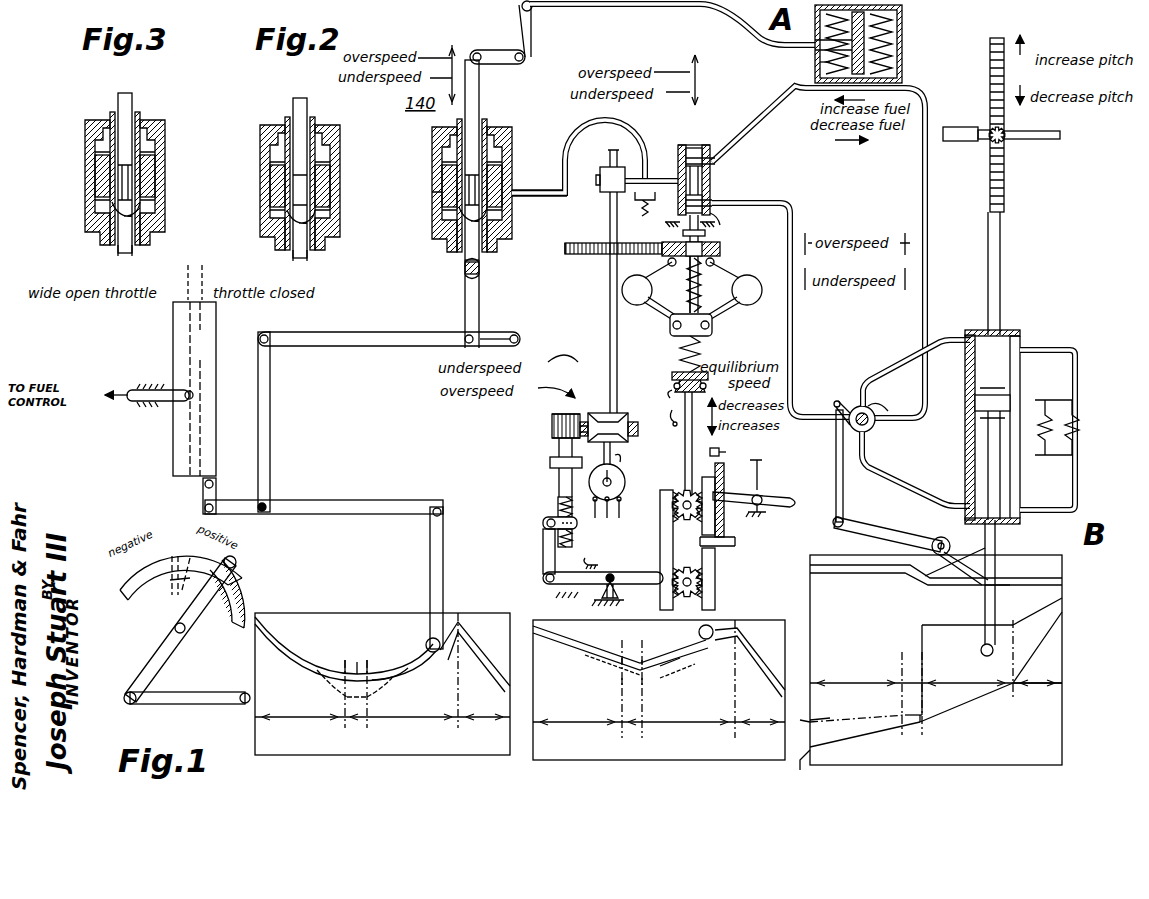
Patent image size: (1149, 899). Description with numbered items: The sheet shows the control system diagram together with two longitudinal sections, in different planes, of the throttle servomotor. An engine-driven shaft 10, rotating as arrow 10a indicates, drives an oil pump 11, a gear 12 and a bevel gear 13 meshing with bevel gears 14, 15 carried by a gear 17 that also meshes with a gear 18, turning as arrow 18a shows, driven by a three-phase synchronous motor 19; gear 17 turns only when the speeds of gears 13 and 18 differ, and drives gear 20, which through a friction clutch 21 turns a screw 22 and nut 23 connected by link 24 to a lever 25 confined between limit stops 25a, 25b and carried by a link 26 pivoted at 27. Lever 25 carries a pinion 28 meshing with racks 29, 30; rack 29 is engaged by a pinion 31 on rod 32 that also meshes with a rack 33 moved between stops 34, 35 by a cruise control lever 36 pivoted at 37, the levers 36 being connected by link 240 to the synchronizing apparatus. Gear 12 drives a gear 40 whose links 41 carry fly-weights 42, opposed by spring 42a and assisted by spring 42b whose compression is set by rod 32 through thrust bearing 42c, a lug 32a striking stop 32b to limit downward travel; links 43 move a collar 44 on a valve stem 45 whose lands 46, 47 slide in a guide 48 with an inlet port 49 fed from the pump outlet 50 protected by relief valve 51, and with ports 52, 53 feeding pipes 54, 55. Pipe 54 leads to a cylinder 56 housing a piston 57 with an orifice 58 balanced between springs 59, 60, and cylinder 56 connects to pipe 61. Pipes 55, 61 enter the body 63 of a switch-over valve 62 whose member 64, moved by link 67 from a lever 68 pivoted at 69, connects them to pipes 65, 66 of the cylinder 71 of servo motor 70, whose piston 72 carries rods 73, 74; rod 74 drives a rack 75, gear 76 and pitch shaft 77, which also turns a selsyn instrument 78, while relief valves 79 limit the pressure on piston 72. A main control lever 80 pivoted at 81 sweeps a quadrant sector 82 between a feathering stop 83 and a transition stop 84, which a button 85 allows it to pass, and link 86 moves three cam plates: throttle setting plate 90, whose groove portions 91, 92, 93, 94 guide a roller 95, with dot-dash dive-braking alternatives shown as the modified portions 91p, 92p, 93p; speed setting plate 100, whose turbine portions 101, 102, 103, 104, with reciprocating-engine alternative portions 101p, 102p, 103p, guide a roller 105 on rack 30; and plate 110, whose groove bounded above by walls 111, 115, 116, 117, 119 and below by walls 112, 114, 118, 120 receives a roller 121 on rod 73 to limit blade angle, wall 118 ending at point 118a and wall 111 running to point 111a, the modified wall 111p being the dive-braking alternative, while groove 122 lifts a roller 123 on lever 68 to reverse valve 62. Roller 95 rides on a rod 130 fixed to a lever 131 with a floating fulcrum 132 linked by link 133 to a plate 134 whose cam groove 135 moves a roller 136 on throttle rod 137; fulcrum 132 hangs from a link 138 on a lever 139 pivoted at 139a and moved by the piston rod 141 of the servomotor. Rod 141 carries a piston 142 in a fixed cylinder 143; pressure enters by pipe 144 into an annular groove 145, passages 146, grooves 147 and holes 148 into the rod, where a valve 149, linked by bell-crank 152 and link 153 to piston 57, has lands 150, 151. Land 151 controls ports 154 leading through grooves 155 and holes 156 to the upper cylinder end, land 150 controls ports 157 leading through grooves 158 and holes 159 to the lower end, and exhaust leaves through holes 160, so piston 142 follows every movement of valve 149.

In FIG. 1, the shaft 10 is at (612, 152).
In FIG. 1, the arrow 10a is at (612, 308).
In FIG. 1, the oil pump 11 is at (604, 167).
In FIG. 1, the gear 12 is at (570, 250).
In FIG. 1, the bevel gear 13 is at (590, 414).
In FIG. 1, the bevel gear 14 is at (580, 424).
In FIG. 1, the bevel gear 15 is at (618, 412).
In FIG. 1, the gear 17 is at (559, 447).
In FIG. 1, the gear 18 is at (612, 448).
In FIG. 1, the arrow 18a is at (637, 456).
In FIG. 1, the three-phase synchronous motor 19 is at (625, 484).
In FIG. 1, the gear 20 is at (552, 418).
In FIG. 1, the friction clutch 21 is at (550, 462).
In FIG. 1, the screw 22 is at (558, 500).
In FIG. 1, the nut 23 is at (577, 523).
In FIG. 1, the link 24 is at (543, 552).
In FIG. 1, the lever 25 is at (613, 569).
In FIG. 1, the limit stop 25a is at (600, 557).
In FIG. 1, the limit stop 25b is at (555, 602).
In FIG. 1, the link 26 is at (616, 588).
In FIG. 1, the pivot 27 is at (616, 607).
In FIG. 1, the pinion 28 is at (686, 587).
In FIG. 1, the rack 29 is at (660, 540).
In FIG. 1, the rack 30 is at (715, 566).
In FIG. 1, the pinion 31 is at (680, 494).
In FIG. 1, the rod 32 is at (685, 446).
In FIG. 1, the lug 32a is at (660, 396).
In FIG. 1, the stop 32b is at (660, 414).
In FIG. 1, the rack 33 is at (724, 476).
In FIG. 1, the stop 34 is at (728, 448).
In FIG. 1, the stop 35 is at (722, 543).
In FIG. 1, the cruise control lever 36 is at (762, 504).
In FIG. 1, the pivot 37 is at (762, 512).
In FIG. 1, the link 240 is at (759, 466).
In FIG. 1, the gear 40 is at (720, 248).
In FIG. 1, the links 41 is at (652, 278).
In FIG. 1, the fly-weights 42 is at (630, 302).
In FIG. 1, the spring 42a is at (688, 292).
In FIG. 1, the spring 42b is at (680, 350).
In FIG. 1, the thrust bearing 42c is at (672, 378).
In FIG. 1, the links 43 is at (660, 318).
In FIG. 1, the collar 44 is at (712, 334).
In FIG. 1, the valve stem 45 is at (712, 228).
In FIG. 1, the land 46 is at (712, 166).
In FIG. 1, the land 47 is at (710, 200).
In FIG. 1, the guide 48 is at (684, 175).
In FIG. 1, the inlet port 49 is at (679, 225).
In FIG. 1, the pump outlet 50 is at (665, 178).
In FIG. 1, the pressure relief valve 51 is at (638, 200).
In FIG. 1, the port 52 is at (718, 144).
In FIG. 1, the port 53 is at (724, 215).
In FIG. 1, the pipe 54 is at (755, 120).
In FIG. 1, the pipe 55 is at (795, 210).
In FIG. 1, the cylinder 56 is at (815, 62).
In FIG. 1, the piston 57 is at (900, 12).
In FIG. 1, the orifice 58 is at (865, 62).
In FIG. 1, the spring 59 is at (818, 30).
In FIG. 1, the spring 60 is at (885, 32).
In FIG. 1, the pipe 61 is at (922, 190).
In FIG. 1, the switch-over valve 62 is at (916, 373).
In FIG. 1, the body 63 is at (860, 432).
In FIG. 1, the movable valve member 64 is at (886, 410).
In FIG. 1, the pipe 65 is at (910, 356).
In FIG. 1, the pipe 66 is at (885, 468).
In FIG. 1, the link 67 is at (836, 447).
In FIG. 1, the lever 68 is at (905, 540).
In FIG. 1, the pivot 69 is at (950, 541).
In FIG. 1, the servo motor 70 is at (1002, 415).
In FIG. 1, the cylinder 71 is at (1020, 368).
In FIG. 1, the piston 72 is at (978, 408).
In FIG. 1, the rod 73 is at (995, 545).
In FIG. 1, the rod 74 is at (1000, 248).
In FIG. 1, the rack 75 is at (1004, 190).
In FIG. 1, the gear 76 is at (992, 130).
In FIG. 1, the shaft 77 is at (1045, 140).
In FIG. 1, the selsyn instrument 78 is at (966, 142).
In FIG. 1, the relief valves 79 is at (1036, 440).
In FIG. 1, the main control lever 80 is at (148, 660).
In FIG. 1, the pivot 81 is at (186, 630).
In FIG. 1, the quadrant sector 82 is at (140, 600).
In FIG. 1, the feathering stop 83 is at (232, 590).
In FIG. 1, the transition stop 84 is at (177, 575).
In FIG. 1, the button 85 is at (226, 562).
In FIG. 1, the link 86 is at (204, 692).
In FIG. 1, the throttle setting cam plate 90 is at (405, 755).
In FIG. 1, the cam groove portion 91 is at (293, 654).
In FIG. 1, the modified cam groove portion 91p is at (325, 688).
In FIG. 1, the cam groove portion 92 is at (356, 657).
In FIG. 1, the modified cam groove portion 92p is at (345, 710).
In FIG. 1, the cam groove portion 93 is at (400, 672).
In FIG. 1, the modified cam groove portion 93p is at (382, 690).
In FIG. 1, the cam groove portion 94 is at (478, 652).
In FIG. 1, the roller 95 is at (428, 641).
In FIG. 1, the speed setting cam plate 100 is at (688, 760).
In FIG. 1, the cam groove portion 101 is at (592, 655).
In FIG. 1, the cam groove portion 101p is at (600, 675).
In FIG. 1, the transition groove 102 is at (632, 651).
In FIG. 1, the cam groove portion 102p is at (630, 680).
In FIG. 1, the cam groove portion 103 is at (670, 668).
In FIG. 1, the cam groove portion 103p is at (693, 670).
In FIG. 1, the cam groove portion 104 is at (752, 655).
In FIG. 1, the roller 105 is at (712, 642).
In FIG. 1, the cam plate 110 is at (945, 765).
In FIG. 1, the wall 111 is at (857, 712).
In FIG. 1, the modified wall 111p is at (830, 715).
In FIG. 1, the point 111a is at (800, 752).
In FIG. 1, the wall 112 is at (848, 740).
In FIG. 1, the wall 114 is at (912, 725).
In FIG. 1, the wall 115 is at (912, 712).
In FIG. 1, the wall 116 is at (922, 653).
In FIG. 1, the wall 117 is at (948, 625).
In FIG. 1, the wall 118 is at (970, 702).
In FIG. 1, the point 118a is at (1013, 688).
In FIG. 1, the wall 119 is at (1048, 608).
In FIG. 1, the wall 120 is at (1035, 648).
In FIG. 1, the roller 121 is at (984, 655).
In FIG. 1, the cam groove 122 is at (915, 582).
In FIG. 1, the roller 123 is at (984, 592).
In FIG. 1, the rod 130 is at (430, 557).
In FIG. 1, the lever 131 is at (357, 503).
In FIG. 1, the floating fulcrum 132 is at (265, 510).
In FIG. 1, the link 133 is at (203, 498).
In FIG. 1, the plate 134 is at (173, 456).
In FIG. 1, the throttle actuating cam groove 135 is at (190, 432).
In FIG. 1, the roller 136 is at (185, 398).
In FIG. 1, the rod 137 is at (160, 390).
In FIG. 1, the link 138 is at (270, 422).
In FIG. 1, the lever 139 is at (403, 348).
In FIG. 1, the pivot 139a is at (498, 330).
In FIG. 3, the piston rod 141 is at (118, 250).
In FIG. 2, the piston rod 141 is at (273, 257).
In FIG. 1, the piston rod 141 is at (448, 316).
In FIG. 1, the piston 142 is at (445, 191).
In FIG. 3, the cylinder 143 is at (85, 124).
In FIG. 2, the cylinder 143 is at (284, 177).
In FIG. 1, the cylinder 143 is at (449, 187).
In FIG. 1, the pipe 144 is at (565, 158).
In FIG. 1, the annular groove 145 is at (470, 190).
In FIG. 1, the passages 146 is at (491, 191).
In FIG. 1, the grooves 147 is at (497, 220).
In FIG. 1, the holes 148 is at (413, 238).
In FIG. 3, the valve 149 is at (118, 96).
In FIG. 2, the valve 149 is at (282, 171).
In FIG. 1, the valve 149 is at (492, 160).
In FIG. 3, the land 150 is at (138, 165).
In FIG. 2, the land 150 is at (330, 181).
In FIG. 1, the land 150 is at (505, 185).
In FIG. 3, the land 151 is at (140, 222).
In FIG. 2, the land 151 is at (330, 220).
In FIG. 1, the land 151 is at (492, 238).
In FIG. 1, the bell-crank 152 is at (512, 50).
In FIG. 1, the link 153 is at (612, 10).
In FIG. 2, the ports 154 is at (295, 199).
In FIG. 2, the grooves 155 is at (296, 185).
In FIG. 2, the holes 156 is at (297, 148).
In FIG. 3, the ports 157 is at (95, 157).
In FIG. 3, the grooves 158 is at (95, 180).
In FIG. 3, the holes 159 is at (95, 204).
In FIG. 1, the holes 160 is at (465, 297).